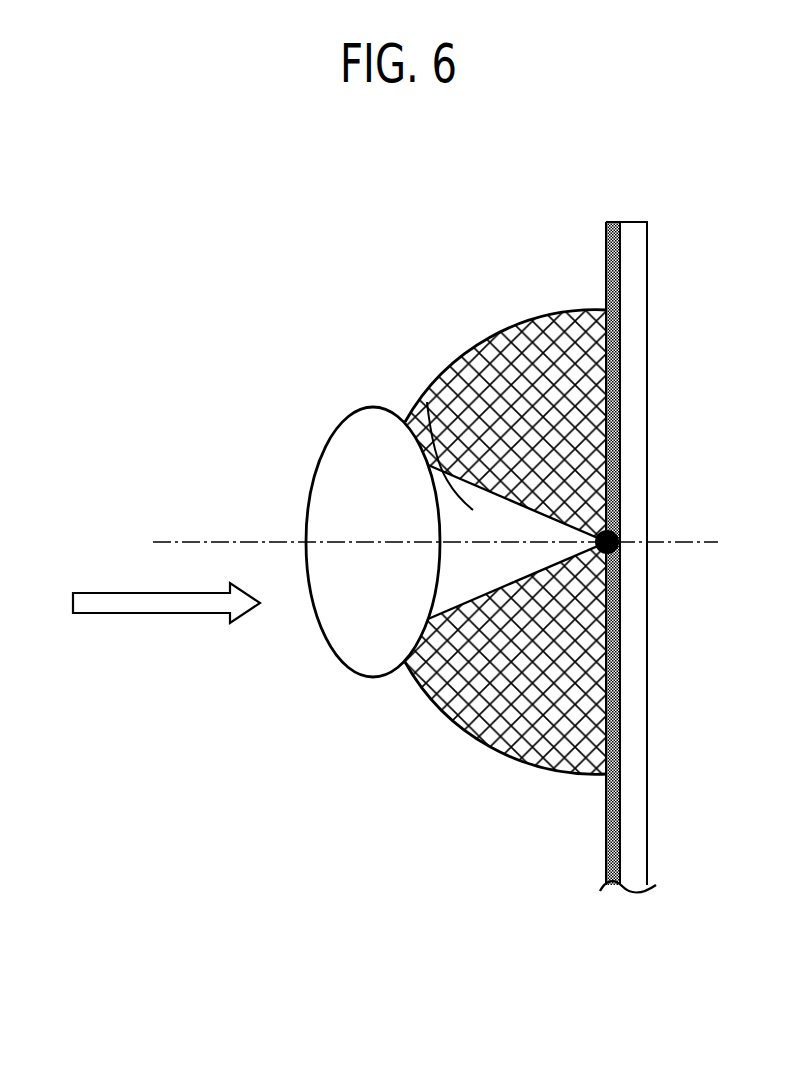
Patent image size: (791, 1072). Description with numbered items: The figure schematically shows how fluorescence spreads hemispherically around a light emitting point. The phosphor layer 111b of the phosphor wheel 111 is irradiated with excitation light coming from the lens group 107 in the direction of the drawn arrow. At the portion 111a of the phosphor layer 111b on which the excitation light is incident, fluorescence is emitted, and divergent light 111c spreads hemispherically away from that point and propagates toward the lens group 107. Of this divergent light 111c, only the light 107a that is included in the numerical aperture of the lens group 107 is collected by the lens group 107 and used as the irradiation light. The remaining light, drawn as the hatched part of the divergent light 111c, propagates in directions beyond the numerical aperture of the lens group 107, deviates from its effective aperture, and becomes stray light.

The lens group 107 is at (327, 490).
The light included in the NA of the lens group 107a is at (427, 402).
The phosphor wheel 111 is at (642, 521).
The portion of the phosphor layer on which the excitation light is incident 111a is at (617, 526).
The phosphor layer 111b is at (609, 222).
The divergent light 111c is at (478, 352).